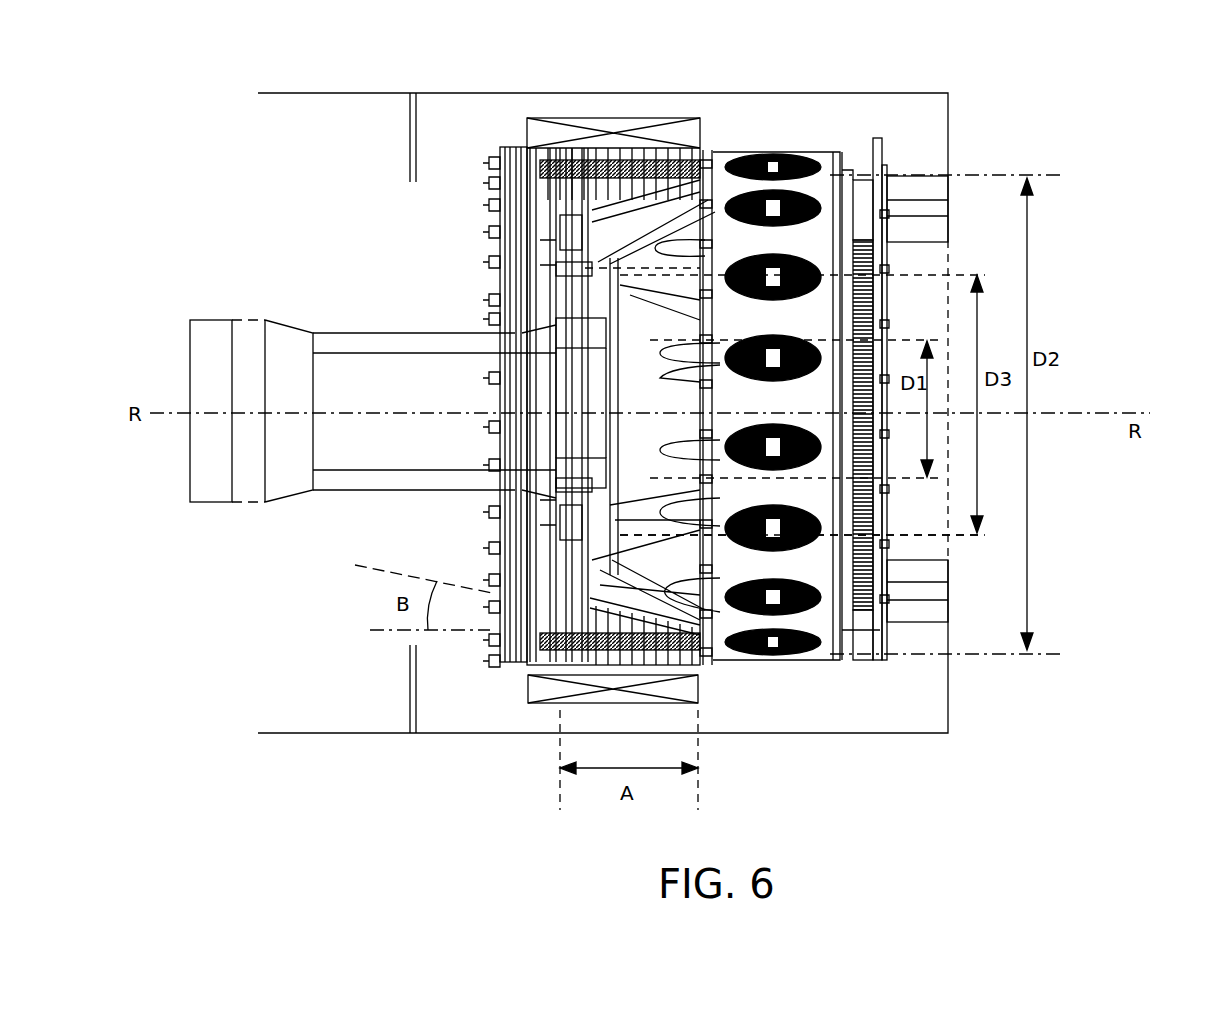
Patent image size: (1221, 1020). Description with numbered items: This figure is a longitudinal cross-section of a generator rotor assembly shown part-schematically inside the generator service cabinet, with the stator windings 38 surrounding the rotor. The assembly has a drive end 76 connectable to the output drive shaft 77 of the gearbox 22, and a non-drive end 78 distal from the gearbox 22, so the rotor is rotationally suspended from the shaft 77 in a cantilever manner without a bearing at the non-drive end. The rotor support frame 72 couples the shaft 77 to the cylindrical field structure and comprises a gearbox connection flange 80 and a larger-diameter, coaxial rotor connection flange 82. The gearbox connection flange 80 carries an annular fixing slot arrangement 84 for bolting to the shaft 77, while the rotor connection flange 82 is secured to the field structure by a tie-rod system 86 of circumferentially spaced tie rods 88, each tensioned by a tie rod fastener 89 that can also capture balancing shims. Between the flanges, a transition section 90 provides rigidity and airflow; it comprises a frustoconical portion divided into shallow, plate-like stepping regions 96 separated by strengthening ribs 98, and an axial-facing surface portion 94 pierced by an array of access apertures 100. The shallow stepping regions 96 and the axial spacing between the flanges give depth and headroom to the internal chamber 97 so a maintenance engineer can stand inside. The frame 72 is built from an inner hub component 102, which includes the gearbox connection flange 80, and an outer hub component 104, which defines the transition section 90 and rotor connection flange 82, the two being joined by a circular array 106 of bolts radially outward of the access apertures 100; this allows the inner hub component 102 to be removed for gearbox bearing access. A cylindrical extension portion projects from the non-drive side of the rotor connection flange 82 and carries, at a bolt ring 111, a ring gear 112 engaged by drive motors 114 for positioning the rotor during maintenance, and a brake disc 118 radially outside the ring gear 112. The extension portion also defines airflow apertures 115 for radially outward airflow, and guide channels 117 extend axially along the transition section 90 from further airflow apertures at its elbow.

The gearbox 22 is at (206, 318).
The stator windings 38 is at (698, 690).
The rotor support frame 72 is at (856, 132).
The drive end 76 is at (262, 226).
The output drive shaft 77 is at (330, 488).
The non-drive end 78 is at (1142, 180).
The gearbox connection flange 80 is at (500, 516).
The rotor connection flange 82 is at (688, 148).
The annular fixing slot arrangement 84 is at (497, 376).
The tie-rod system 86 is at (483, 133).
The tie rods 88 is at (487, 135).
The tie rod fastener 89 is at (708, 162).
The transition section 90 is at (878, 548).
The axial-facing surface portion 94 is at (532, 158).
The stepping regions 96 is at (497, 304).
The internal chamber 97 is at (770, 398).
The strengthening ribs 98 is at (626, 162).
The access apertures 100 is at (503, 244).
The inner hub component 102 is at (560, 545).
The outer hub component 104 is at (600, 588).
The circular array of bolts 106 is at (553, 272).
The bolt ring 111 is at (898, 150).
The ring gear 112 is at (880, 545).
The drive motors 114 is at (915, 180).
The airflow apertures 115 is at (870, 285).
The guide channels 117 is at (770, 345).
The brake disc 118 is at (882, 150).